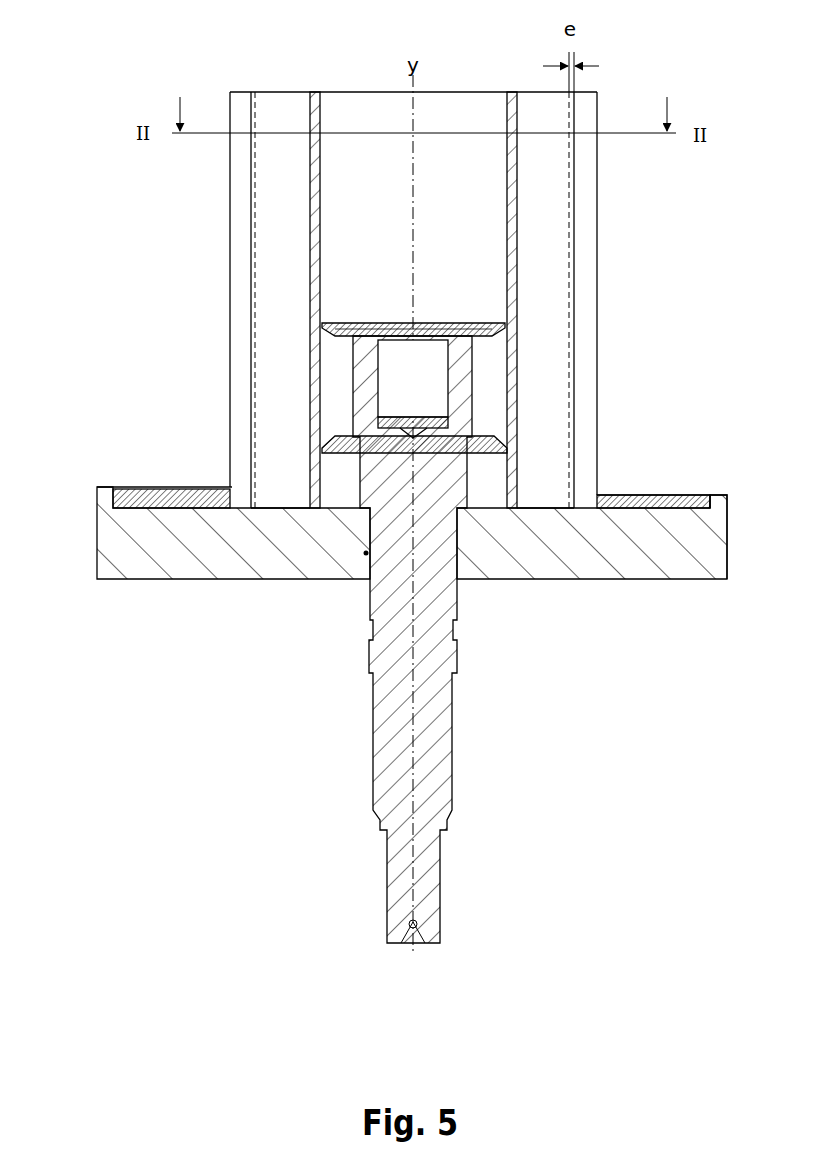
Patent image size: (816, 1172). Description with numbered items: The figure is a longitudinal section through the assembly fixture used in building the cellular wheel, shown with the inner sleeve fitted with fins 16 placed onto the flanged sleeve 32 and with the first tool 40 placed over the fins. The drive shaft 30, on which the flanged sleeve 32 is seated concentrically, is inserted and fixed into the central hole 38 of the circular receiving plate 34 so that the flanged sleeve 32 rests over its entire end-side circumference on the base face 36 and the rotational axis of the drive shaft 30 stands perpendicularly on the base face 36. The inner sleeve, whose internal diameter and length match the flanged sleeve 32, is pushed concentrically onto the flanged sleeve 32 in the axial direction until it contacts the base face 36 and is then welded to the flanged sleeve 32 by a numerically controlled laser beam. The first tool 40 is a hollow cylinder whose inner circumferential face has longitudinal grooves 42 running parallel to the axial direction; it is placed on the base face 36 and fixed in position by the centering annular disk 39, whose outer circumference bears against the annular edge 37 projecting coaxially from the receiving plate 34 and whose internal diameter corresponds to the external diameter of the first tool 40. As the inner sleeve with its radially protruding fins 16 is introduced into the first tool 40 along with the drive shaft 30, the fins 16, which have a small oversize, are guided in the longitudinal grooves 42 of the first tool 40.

The fins 16 is at (277, 312).
The drive shaft 30 is at (452, 733).
The flanged sleeve 32 is at (517, 272).
The receiving plate 34 is at (227, 562).
The base face 36 is at (170, 500).
The annular edge 37 is at (723, 496).
The central hole 38 is at (366, 553).
The centering annular disk 39 is at (672, 497).
The first tool 40 is at (240, 218).
The longitudinal grooves 42 is at (253, 89).